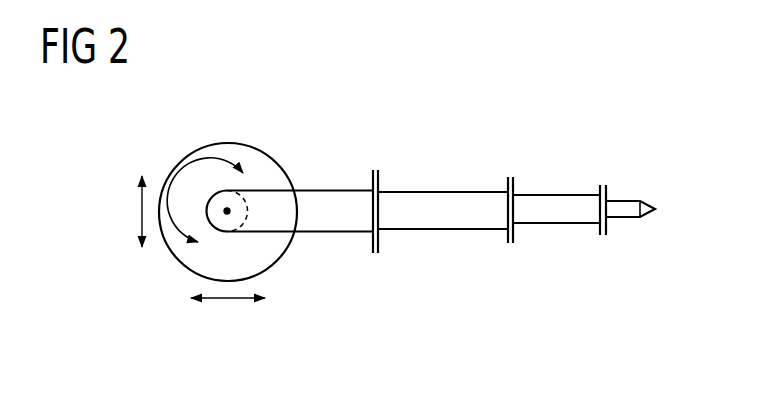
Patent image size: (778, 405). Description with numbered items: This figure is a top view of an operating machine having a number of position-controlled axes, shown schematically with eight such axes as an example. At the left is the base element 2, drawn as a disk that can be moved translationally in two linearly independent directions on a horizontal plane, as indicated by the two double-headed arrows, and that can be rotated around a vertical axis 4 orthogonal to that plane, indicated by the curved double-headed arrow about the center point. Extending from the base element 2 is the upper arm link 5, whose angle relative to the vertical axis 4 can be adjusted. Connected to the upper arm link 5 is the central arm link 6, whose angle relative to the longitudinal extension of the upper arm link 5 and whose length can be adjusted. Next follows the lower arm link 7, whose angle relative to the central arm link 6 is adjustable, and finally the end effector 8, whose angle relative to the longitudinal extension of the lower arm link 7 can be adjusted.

The base element 2 is at (204, 142).
The vertical axis 4 is at (229, 212).
The upper arm link 5 is at (327, 190).
The central arm link 6 is at (447, 191).
The lower arm link 7 is at (558, 194).
The end effector 8 is at (625, 200).